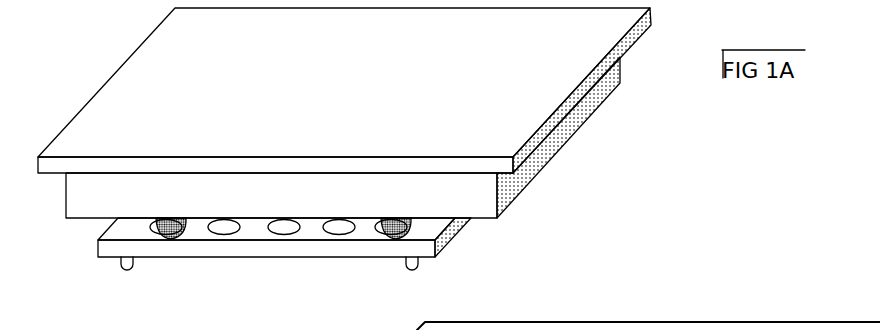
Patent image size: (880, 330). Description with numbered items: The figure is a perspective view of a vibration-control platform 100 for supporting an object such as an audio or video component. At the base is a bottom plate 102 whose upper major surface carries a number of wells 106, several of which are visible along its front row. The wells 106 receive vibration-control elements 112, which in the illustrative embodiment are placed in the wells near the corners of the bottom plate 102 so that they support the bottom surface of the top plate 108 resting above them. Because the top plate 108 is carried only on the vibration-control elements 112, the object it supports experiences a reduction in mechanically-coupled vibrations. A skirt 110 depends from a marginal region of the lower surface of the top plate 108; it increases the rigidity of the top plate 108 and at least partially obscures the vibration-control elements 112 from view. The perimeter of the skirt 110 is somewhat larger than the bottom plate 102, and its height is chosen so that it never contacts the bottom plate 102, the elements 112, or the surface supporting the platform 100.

The vibration-control platform 100 is at (656, 152).
The bottom plate 102 is at (458, 234).
The wells 106 is at (288, 231).
The top plate 108 is at (127, 80).
The skirt 110 is at (508, 193).
The vibration-control elements 112 is at (192, 230).